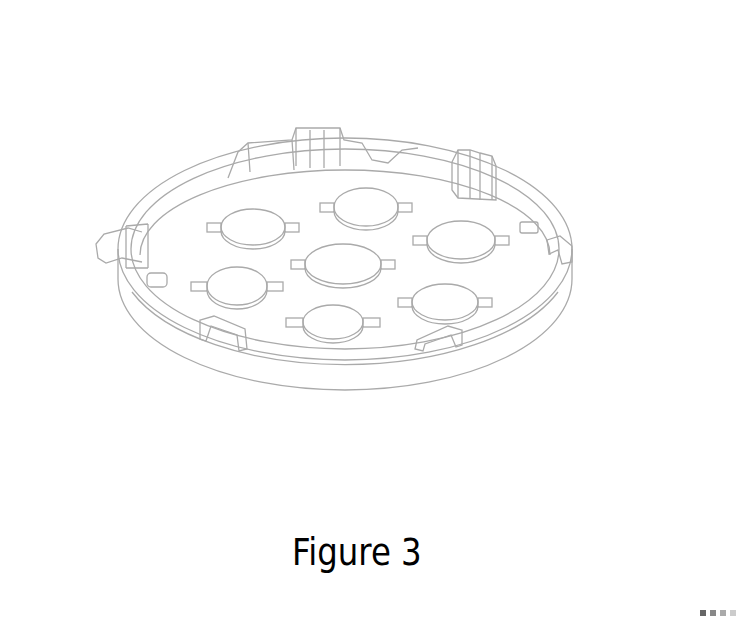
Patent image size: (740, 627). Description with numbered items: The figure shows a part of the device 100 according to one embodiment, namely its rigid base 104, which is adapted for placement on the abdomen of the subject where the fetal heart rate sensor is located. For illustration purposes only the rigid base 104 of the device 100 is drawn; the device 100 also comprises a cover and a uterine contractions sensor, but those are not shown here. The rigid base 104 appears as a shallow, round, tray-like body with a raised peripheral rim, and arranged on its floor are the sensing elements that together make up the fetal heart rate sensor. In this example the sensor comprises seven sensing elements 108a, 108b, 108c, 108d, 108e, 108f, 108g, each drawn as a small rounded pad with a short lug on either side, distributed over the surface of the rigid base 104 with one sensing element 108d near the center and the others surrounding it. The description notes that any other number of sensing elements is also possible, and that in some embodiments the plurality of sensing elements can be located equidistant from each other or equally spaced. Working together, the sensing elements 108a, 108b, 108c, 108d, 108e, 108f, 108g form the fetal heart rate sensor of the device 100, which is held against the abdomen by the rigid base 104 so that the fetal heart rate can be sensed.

The device 100 is at (489, 60).
The rigid base 104 is at (190, 257).
The sensing element 108a is at (247, 227).
The sensing element 108b is at (375, 208).
The sensing element 108c is at (468, 235).
The sensing element 108d is at (350, 265).
The sensing element 108e is at (450, 298).
The sensing element 108f is at (330, 317).
The sensing element 108g is at (228, 290).